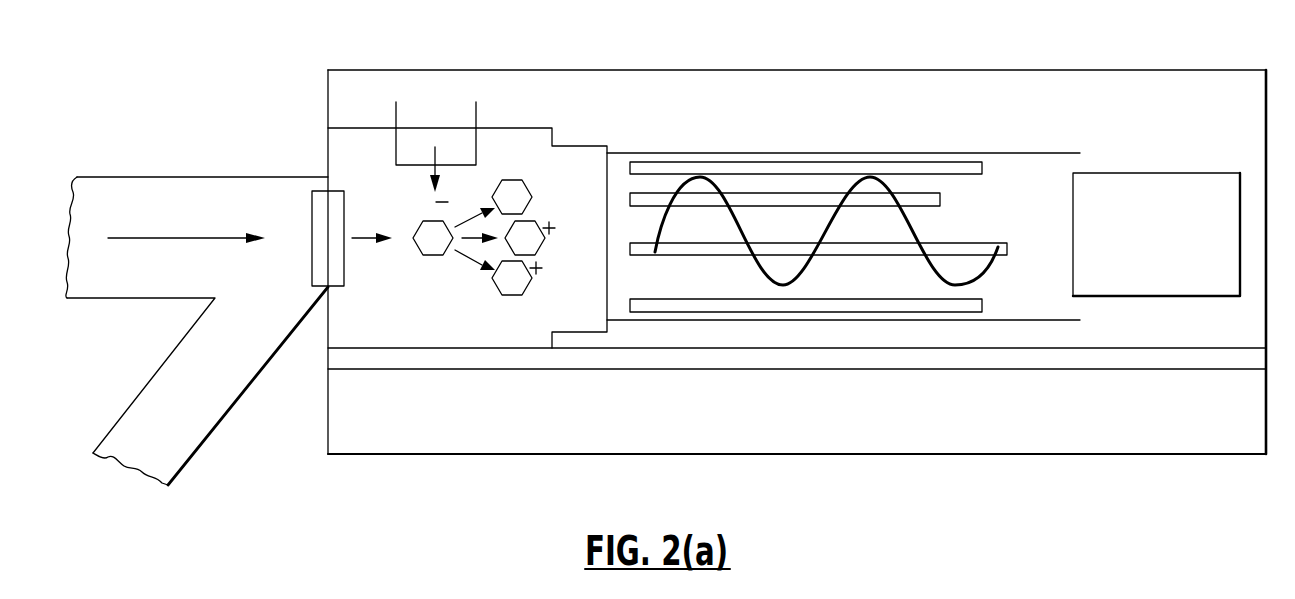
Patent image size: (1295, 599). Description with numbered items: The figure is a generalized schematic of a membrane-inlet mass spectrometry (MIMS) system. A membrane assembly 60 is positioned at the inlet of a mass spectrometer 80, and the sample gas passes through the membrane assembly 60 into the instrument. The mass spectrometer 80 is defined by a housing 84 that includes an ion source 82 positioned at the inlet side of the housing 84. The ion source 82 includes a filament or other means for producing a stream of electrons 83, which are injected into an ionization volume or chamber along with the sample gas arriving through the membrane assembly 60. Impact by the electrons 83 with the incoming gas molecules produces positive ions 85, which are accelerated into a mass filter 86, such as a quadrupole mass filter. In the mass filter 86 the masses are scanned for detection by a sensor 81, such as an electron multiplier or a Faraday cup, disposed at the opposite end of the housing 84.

The membrane assembly 60 is at (305, 187).
The mass spectrometer 80 is at (881, 65).
The sensor 81 is at (1135, 195).
The ion source 82 is at (410, 112).
The electrons 83 is at (433, 256).
The housing 84 is at (885, 455).
The positive ions 85 is at (513, 193).
The mass filter 86 is at (750, 170).